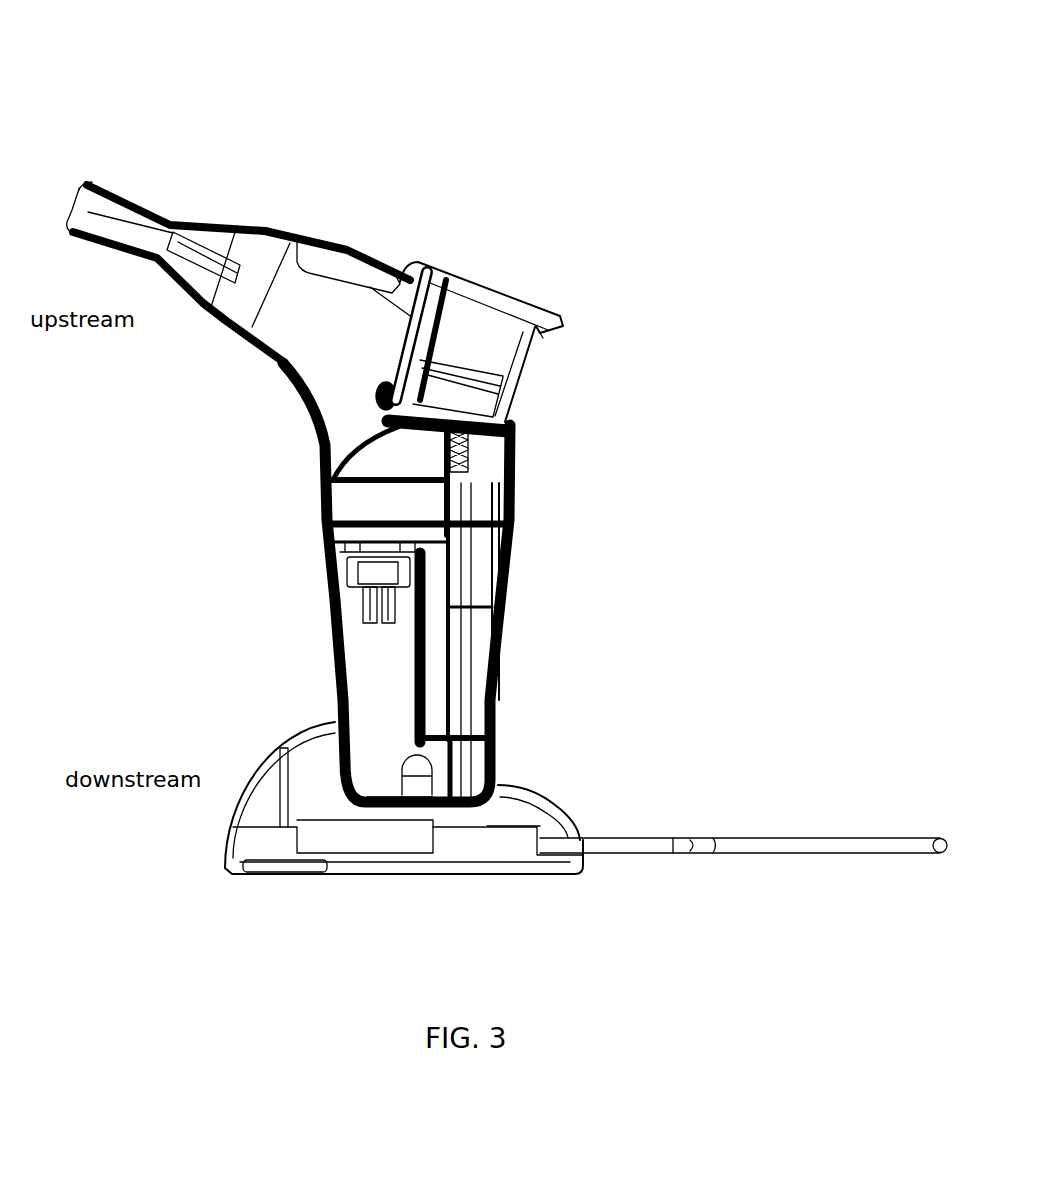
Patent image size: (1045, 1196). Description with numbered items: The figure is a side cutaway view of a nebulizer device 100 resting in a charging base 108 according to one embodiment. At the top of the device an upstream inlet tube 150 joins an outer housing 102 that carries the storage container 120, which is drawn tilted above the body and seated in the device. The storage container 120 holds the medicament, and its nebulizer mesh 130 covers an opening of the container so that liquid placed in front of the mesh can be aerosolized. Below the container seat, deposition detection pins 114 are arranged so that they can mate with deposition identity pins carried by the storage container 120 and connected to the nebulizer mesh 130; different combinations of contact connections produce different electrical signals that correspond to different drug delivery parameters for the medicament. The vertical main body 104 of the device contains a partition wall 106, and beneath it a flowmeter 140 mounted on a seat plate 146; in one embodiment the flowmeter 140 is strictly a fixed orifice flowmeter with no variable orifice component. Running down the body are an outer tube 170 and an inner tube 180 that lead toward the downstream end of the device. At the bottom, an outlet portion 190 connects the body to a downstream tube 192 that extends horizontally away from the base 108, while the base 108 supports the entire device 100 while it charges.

The nebulizer device 100 is at (580, 114).
The upstream tube 150 is at (131, 190).
The housing clamp 102 is at (347, 250).
The storage container 120 is at (497, 277).
The nebulizer mesh 130 is at (392, 388).
The housing body 104 is at (517, 478).
The deposition detection pins 114 is at (467, 460).
The inner tube 180 is at (482, 596).
The outer tube 170 is at (458, 678).
The partition wall 106 is at (324, 487).
The valve seat plate 146 is at (326, 571).
The flowmeter 140 is at (357, 603).
The outlet 190 is at (520, 787).
The downstream tube 192 is at (770, 837).
The base 108 is at (388, 806).